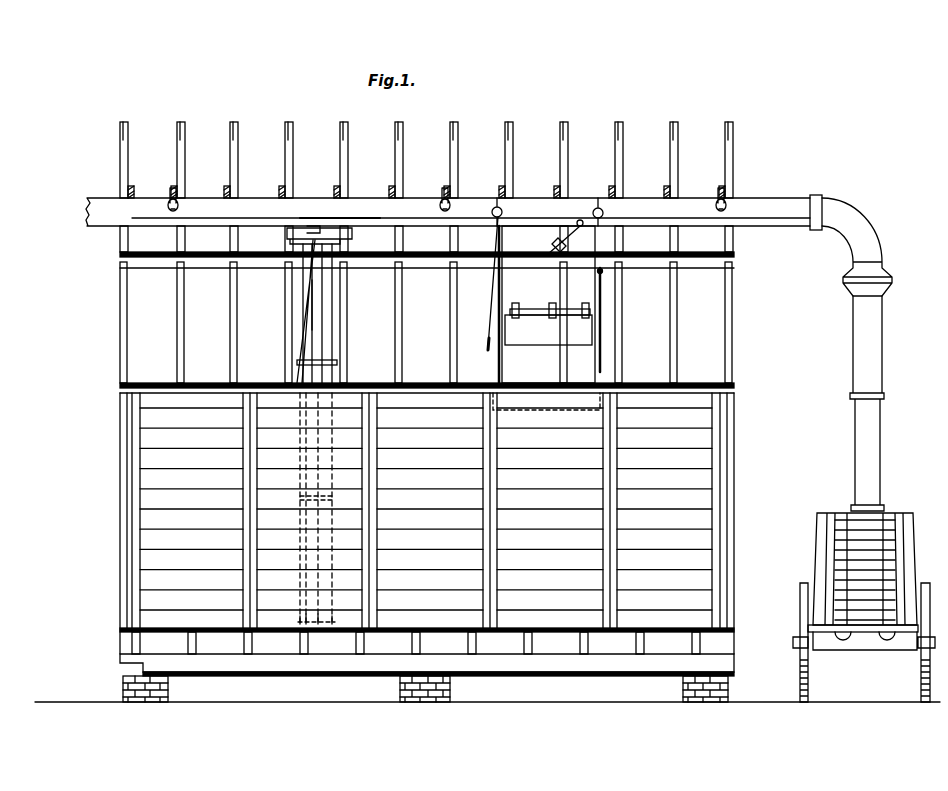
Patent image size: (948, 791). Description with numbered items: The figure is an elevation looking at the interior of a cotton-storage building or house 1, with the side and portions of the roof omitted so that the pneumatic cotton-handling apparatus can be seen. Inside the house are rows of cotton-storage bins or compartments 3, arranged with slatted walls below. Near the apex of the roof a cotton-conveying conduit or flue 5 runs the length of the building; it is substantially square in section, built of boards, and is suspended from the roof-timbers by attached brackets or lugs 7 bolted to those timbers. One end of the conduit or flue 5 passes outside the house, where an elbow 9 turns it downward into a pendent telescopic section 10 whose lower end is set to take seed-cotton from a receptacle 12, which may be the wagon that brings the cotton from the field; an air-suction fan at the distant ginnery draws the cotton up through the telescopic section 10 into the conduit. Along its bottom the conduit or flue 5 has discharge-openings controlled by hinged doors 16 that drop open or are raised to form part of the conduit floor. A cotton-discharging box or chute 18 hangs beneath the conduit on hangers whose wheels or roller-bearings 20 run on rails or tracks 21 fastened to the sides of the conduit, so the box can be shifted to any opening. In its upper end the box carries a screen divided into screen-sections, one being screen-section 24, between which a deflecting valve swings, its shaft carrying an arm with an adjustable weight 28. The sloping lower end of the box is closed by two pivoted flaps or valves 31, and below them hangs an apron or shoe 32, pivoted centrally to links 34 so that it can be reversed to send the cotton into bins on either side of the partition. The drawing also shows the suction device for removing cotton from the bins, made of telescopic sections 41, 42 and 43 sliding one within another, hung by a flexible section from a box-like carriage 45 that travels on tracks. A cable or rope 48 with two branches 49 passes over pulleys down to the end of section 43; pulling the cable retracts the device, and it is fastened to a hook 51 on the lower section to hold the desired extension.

The cotton-storage building or house 1 is at (116, 483).
The cotton-storage bins or compartments 3 is at (426, 510).
The cotton-conveying conduit or flue 5 is at (454, 212).
The brackets or lugs 7 is at (166, 190).
The elbow 9 is at (857, 247).
The telescopic section 10 is at (880, 392).
The receptacle 12 is at (908, 552).
The doors 16 is at (492, 296).
The cotton-discharging box or chute 18 is at (546, 318).
The wheels or roller-bearings 20 is at (503, 212).
The rails or tracks 21 is at (378, 219).
The screen-section 24 is at (560, 243).
The adjustable weight 28 is at (556, 257).
The doors, flaps, or valves 31 is at (550, 321).
The apron or shoe 32 is at (548, 345).
The links 34 is at (498, 353).
The upper telescopic section 41 is at (330, 288).
The telescopic section 42 is at (338, 365).
The lower telescopic section 43 is at (325, 552).
The box-like carriage 45 is at (345, 240).
The cable or rope 48 is at (298, 370).
The cable branches 49 is at (320, 308).
The hook 51 is at (300, 618).